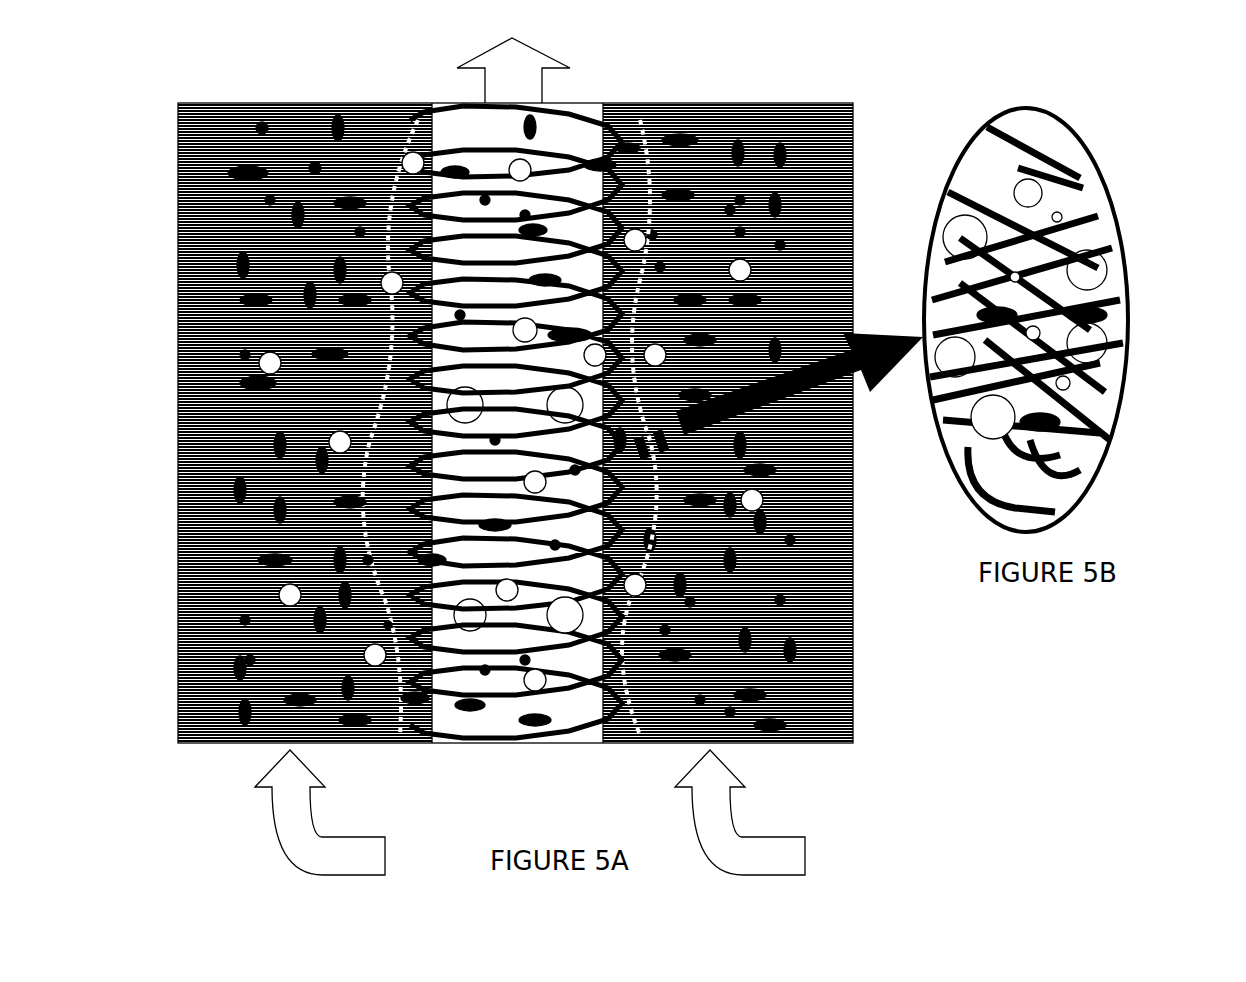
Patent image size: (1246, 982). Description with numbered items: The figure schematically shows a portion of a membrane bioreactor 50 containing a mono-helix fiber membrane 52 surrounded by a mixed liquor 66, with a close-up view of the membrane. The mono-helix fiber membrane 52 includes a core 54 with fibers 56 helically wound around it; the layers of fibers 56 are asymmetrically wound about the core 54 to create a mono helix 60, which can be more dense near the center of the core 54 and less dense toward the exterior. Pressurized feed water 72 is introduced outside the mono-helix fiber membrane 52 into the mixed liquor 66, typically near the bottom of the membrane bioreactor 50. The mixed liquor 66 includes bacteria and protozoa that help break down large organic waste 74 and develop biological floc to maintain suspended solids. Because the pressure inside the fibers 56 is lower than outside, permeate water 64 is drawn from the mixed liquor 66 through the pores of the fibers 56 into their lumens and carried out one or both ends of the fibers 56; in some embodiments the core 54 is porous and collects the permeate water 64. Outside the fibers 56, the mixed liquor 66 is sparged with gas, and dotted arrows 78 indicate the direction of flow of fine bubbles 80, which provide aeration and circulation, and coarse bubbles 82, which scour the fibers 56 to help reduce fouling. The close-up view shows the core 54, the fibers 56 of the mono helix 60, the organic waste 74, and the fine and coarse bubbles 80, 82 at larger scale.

In FIG. 5A, the membrane bioreactor 50 is at (813, 140).
In FIG. 5A, the mono-helix fiber membrane 52 is at (580, 748).
In FIG. 5A, the core 54 is at (450, 108).
In FIG. 5B, the core 54 is at (1052, 138).
In FIG. 5A, the fibers 56 is at (480, 722).
In FIG. 5B, the fibers 56 is at (1077, 187).
In FIG. 5A, the mono helix 60 is at (563, 140).
In FIG. 5B, the mono helix 60 is at (1130, 283).
In FIG. 5A, the permeate water 64 is at (527, 84).
In FIG. 5A, the mixed liquor 66 is at (247, 445).
In FIG. 5A, the pressurized feed water 72 is at (364, 867).
In FIG. 5A, the large organic waste 74 is at (248, 173).
In FIG. 5B, the large organic waste 74 is at (1105, 433).
In FIG. 5A, the dotted arrows 78 is at (647, 167).
In FIG. 5A, the fine bubbles 80 is at (283, 598).
In FIG. 5B, the fine bubbles 80 is at (1067, 218).
In FIG. 5A, the coarse bubbles 82 is at (578, 625).
In FIG. 5B, the coarse bubbles 82 is at (947, 225).